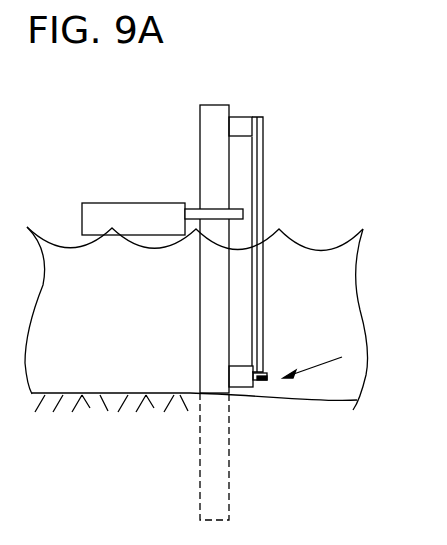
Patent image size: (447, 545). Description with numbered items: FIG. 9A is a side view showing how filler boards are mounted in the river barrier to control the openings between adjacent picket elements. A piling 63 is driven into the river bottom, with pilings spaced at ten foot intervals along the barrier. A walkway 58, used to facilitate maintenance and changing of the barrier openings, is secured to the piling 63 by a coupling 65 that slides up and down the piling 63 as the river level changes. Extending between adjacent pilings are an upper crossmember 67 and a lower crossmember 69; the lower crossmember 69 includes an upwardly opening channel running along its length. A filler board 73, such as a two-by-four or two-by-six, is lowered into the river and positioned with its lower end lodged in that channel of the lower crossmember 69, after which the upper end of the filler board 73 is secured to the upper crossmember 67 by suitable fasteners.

The walkway 58 is at (105, 203).
The coupling 65 is at (215, 209).
The upper crossmember 67 is at (242, 116).
The filler board 73 is at (263, 285).
The piling 63 is at (200, 305).
The lower crossmember 69 is at (241, 388).